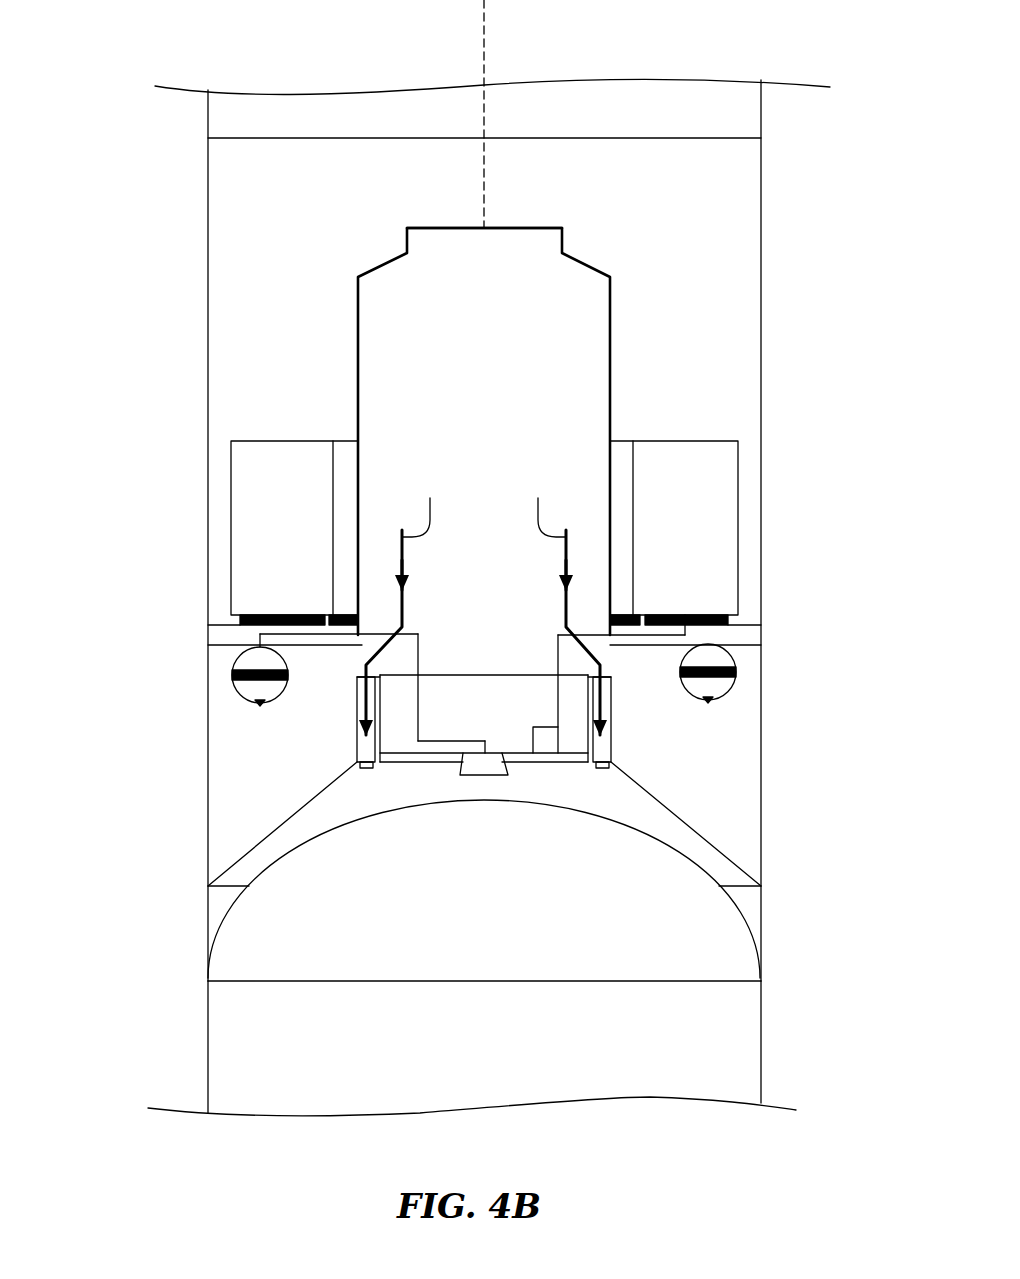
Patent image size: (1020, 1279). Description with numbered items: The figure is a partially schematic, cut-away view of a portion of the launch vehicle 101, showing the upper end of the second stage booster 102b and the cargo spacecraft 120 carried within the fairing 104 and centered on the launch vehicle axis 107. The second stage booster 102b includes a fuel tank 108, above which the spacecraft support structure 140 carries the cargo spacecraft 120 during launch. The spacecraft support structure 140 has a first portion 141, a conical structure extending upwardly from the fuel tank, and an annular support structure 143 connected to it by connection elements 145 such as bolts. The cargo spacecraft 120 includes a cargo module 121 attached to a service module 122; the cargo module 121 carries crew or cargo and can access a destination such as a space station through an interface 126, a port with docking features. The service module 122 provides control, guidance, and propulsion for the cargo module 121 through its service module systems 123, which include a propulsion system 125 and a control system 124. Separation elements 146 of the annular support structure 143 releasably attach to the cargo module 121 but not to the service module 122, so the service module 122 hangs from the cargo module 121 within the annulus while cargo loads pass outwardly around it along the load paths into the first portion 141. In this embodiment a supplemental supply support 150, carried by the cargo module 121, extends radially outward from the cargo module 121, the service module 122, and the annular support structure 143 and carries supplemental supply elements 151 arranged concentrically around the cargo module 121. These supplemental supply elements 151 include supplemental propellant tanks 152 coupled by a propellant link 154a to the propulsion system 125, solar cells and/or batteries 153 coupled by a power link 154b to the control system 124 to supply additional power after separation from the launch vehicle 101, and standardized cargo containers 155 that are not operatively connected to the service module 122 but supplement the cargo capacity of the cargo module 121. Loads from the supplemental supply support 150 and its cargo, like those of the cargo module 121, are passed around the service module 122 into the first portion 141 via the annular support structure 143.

The launch vehicle 101 is at (133, 381).
The second stage booster 102b is at (762, 1018).
The fairing 104 is at (762, 165).
The launch vehicle axis 107 is at (485, 18).
The fuel tank 108 is at (698, 1065).
The cargo spacecraft 120 is at (790, 226).
The cargo module 121 is at (612, 318).
The service module 122 is at (488, 675).
The service module systems 123 is at (580, 795).
The control system 124 is at (533, 727).
The propulsion system 125 is at (437, 763).
The interface 126 is at (437, 226).
The spacecraft support structure 140 is at (248, 834).
The first portion 141 is at (296, 737).
The annular support structure 143 is at (341, 740).
The connection elements 145 is at (612, 764).
The separation elements 146 is at (360, 666).
The supplemental supply support 150 is at (208, 636).
The supplemental supply elements 151 is at (342, 434).
The supplemental propellant tanks 152 is at (234, 691).
The solar cells and/or batteries 153 is at (683, 441).
The propellant link 154a is at (420, 640).
The power link 154b is at (555, 640).
The cargo containers 155 is at (255, 441).